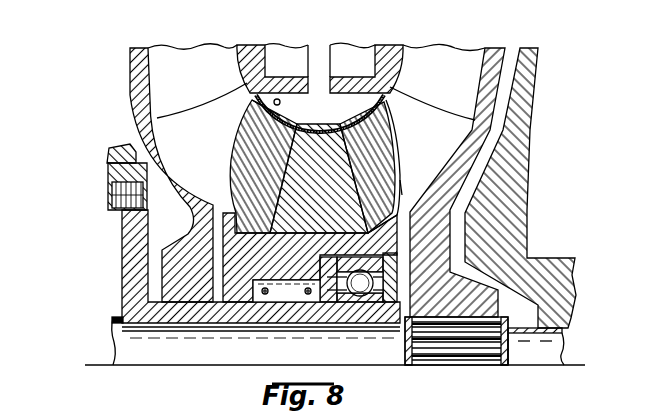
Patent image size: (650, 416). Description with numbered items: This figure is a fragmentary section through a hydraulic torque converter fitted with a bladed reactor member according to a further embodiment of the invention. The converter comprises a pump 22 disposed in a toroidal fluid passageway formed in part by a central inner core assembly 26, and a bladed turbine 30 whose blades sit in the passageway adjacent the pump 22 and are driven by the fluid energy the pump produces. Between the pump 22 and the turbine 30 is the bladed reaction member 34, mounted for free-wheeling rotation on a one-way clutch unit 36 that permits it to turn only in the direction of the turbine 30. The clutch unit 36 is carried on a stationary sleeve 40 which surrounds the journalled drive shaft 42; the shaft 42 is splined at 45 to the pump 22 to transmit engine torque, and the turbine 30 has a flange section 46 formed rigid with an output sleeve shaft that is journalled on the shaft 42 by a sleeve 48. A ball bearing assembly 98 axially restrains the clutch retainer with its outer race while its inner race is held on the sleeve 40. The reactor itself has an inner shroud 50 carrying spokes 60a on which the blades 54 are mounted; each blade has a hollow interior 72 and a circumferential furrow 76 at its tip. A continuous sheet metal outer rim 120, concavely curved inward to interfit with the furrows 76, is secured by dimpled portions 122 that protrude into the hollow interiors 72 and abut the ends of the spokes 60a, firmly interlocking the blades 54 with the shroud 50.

The pump 22 is at (470, 60).
The central inner core assembly 26 is at (303, 41).
The bladed turbine 30 is at (207, 62).
The bladed reaction member 34 is at (414, 174).
The one-way clutch unit 36 is at (293, 304).
The stationary sleeve 40 is at (228, 312).
The drive shaft 42 is at (178, 347).
The spline 45 is at (450, 318).
The flange section 46 is at (531, 120).
The sleeve 48 is at (566, 322).
The inner shroud 50 is at (295, 221).
The blades 54 is at (393, 141).
The spokes 60a is at (341, 174).
The hollow interior 72 is at (263, 166).
The furrows 76 is at (274, 106).
The ball bearing assembly 98 is at (373, 287).
The outer rim 120 is at (320, 117).
The dimpled portions 122 is at (283, 163).